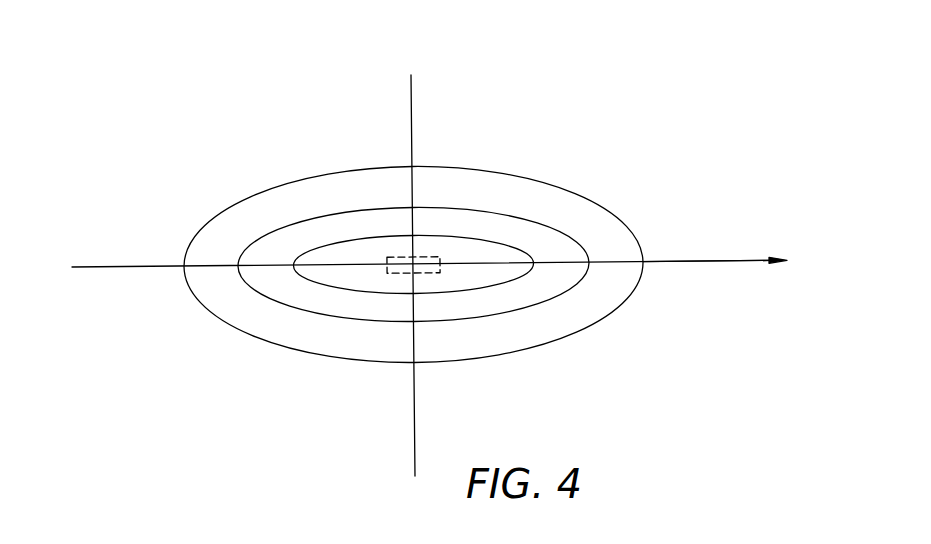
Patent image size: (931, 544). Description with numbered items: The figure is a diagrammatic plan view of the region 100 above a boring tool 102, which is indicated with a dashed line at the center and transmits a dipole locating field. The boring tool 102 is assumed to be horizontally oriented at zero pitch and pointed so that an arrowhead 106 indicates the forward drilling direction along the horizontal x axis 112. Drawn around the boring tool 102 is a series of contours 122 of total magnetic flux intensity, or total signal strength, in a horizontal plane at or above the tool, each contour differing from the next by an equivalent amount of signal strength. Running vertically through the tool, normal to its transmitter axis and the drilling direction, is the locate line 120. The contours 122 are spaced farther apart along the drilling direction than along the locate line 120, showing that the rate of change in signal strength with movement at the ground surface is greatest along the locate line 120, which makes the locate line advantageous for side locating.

The region 100 is at (439, 263).
The boring tool 102 is at (432, 273).
The arrowhead 106 is at (733, 261).
The x axis 112 is at (677, 262).
The locate line 120 is at (414, 413).
The contours 122 is at (587, 197).